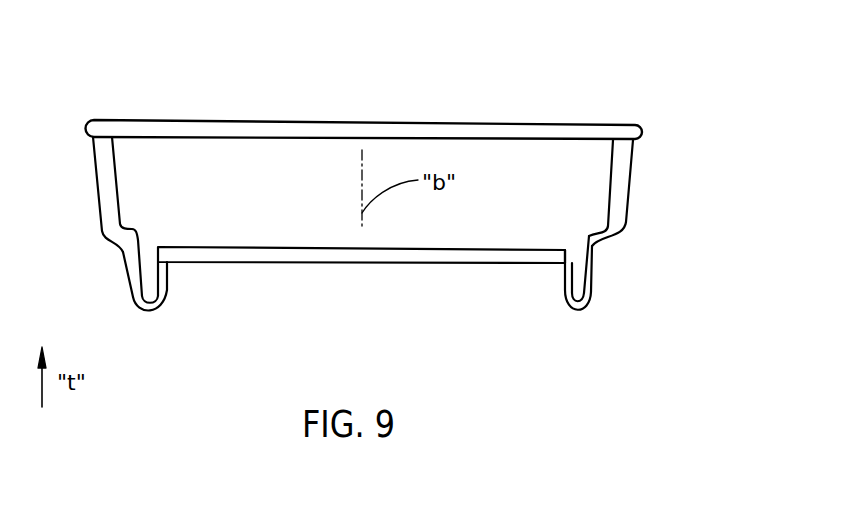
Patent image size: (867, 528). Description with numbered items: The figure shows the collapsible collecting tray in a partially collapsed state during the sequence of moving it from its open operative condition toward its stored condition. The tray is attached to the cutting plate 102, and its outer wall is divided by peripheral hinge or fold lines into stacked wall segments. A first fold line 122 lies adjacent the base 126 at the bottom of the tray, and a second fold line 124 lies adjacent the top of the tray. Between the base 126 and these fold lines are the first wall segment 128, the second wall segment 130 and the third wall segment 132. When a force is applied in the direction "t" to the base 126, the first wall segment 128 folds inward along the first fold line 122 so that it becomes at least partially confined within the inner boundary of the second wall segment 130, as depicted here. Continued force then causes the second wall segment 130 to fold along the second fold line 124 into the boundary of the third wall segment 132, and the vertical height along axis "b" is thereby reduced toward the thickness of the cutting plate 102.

The cutting plate 102 is at (337, 135).
The third wall segment 132 is at (631, 178).
The second fold line 124 is at (606, 239).
The second wall segment 130 is at (591, 273).
The base 126 is at (400, 262).
The first wall segment 128 is at (167, 284).
The first fold line 122 is at (149, 311).